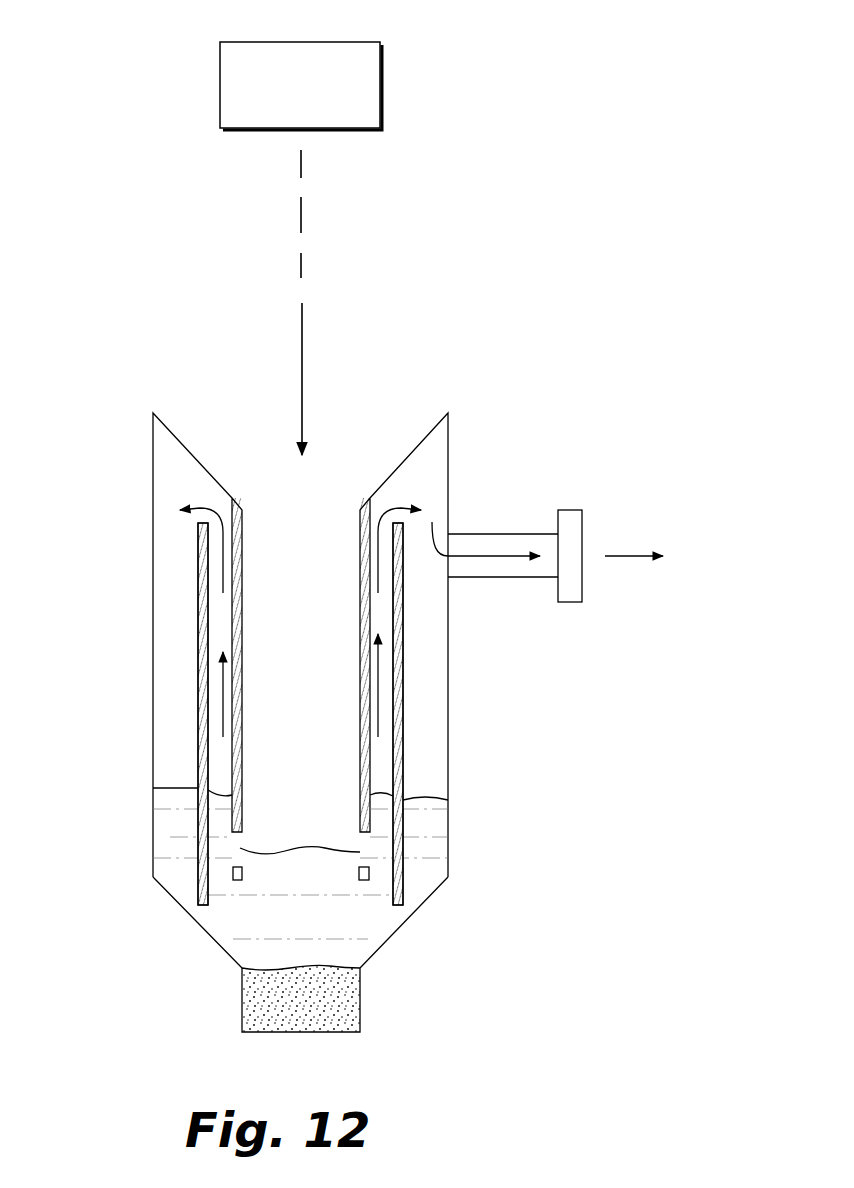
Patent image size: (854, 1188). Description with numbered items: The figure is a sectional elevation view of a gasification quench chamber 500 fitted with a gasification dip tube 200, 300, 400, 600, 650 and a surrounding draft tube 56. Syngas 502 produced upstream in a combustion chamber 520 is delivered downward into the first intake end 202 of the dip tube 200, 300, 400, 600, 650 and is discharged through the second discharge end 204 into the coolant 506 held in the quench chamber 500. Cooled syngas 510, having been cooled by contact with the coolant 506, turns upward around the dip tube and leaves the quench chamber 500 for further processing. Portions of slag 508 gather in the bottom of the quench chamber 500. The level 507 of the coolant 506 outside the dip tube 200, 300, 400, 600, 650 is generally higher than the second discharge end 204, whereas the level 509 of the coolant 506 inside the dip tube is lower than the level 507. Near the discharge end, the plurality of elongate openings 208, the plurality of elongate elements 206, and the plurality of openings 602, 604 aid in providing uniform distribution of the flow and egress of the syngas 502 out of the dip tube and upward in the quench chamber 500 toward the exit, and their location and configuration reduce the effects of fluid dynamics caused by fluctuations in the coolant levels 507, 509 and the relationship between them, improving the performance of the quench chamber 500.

The gasification quench chamber 500 is at (477, 297).
The combustion chamber 520 is at (220, 72).
The syngas 502 is at (301, 213).
The first intake end 202 is at (344, 447).
The cooled syngas 510 is at (205, 492).
The gasification dip tube 200 is at (227, 712).
The gasification dip tube 300 is at (227, 714).
The gasification dip tube 400 is at (227, 714).
The gasification dip tube 600 is at (228, 714).
The gasification dip tube 650 is at (215, 627).
The draft tube 56 is at (198, 776).
The coolant level outside the dip tube 507 is at (421, 797).
The coolant level within the dip tube 509 is at (318, 847).
The plurality of elongate elements 206 is at (195, 855).
The plurality of elongate openings 208 is at (195, 860).
The plurality of openings 602 is at (195, 860).
The nozzle 604 is at (227, 845).
The second discharge end 204 is at (232, 905).
The coolant 506 is at (387, 926).
The slag 508 is at (312, 1015).